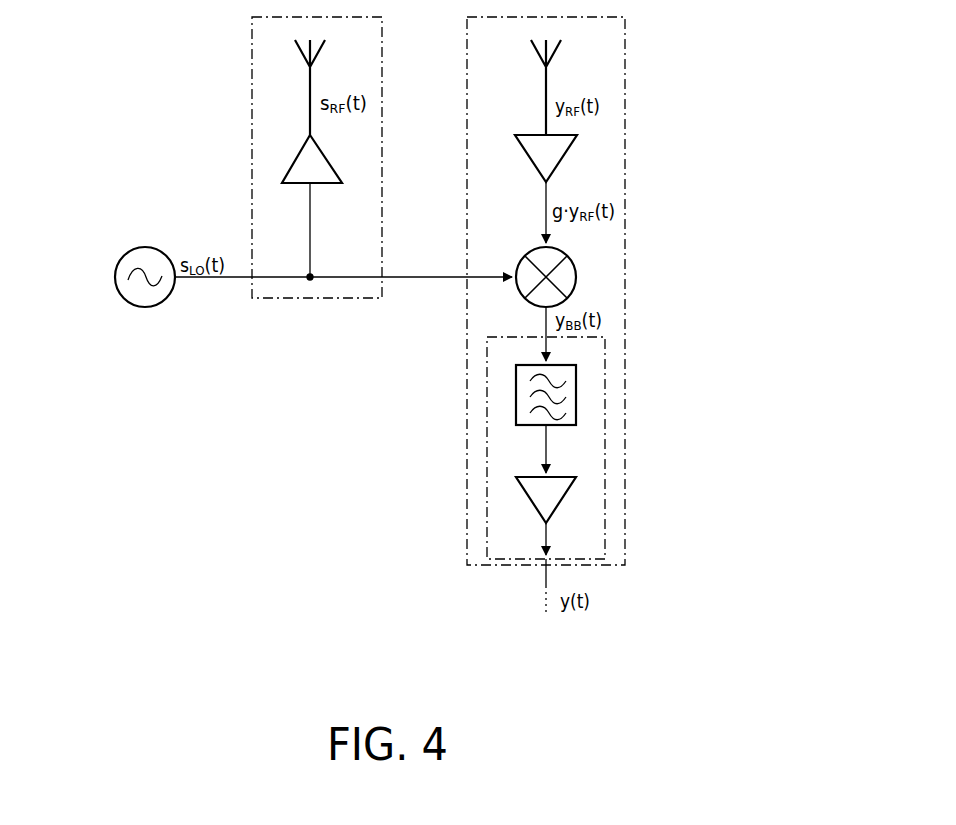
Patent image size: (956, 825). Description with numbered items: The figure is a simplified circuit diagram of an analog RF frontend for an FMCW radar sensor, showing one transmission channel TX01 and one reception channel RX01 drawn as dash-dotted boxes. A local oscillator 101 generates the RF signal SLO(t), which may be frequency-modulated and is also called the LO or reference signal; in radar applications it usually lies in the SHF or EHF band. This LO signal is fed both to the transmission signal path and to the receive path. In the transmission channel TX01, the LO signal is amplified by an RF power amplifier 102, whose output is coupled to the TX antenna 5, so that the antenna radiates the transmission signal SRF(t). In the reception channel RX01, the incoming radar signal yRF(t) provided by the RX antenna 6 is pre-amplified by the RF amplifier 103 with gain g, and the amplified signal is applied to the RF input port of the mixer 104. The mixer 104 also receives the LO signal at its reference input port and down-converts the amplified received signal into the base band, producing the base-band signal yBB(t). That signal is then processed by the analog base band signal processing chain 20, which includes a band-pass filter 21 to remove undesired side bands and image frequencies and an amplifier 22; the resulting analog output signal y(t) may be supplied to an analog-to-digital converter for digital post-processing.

The TX antenna 5 is at (305, 64).
The RF power amplifier 102 is at (287, 168).
The local oscillator 101 is at (142, 307).
The RX antenna 6 is at (556, 54).
The RF amplifier 103 is at (565, 160).
The mixer 104 is at (577, 275).
The analog base band signal processing chain 20 is at (605, 428).
The band-pass filter 21 is at (516, 398).
The amplifier 22 is at (532, 500).
The transmission channel TX01 is at (332, 157).
The reception channel RX01 is at (532, 291).